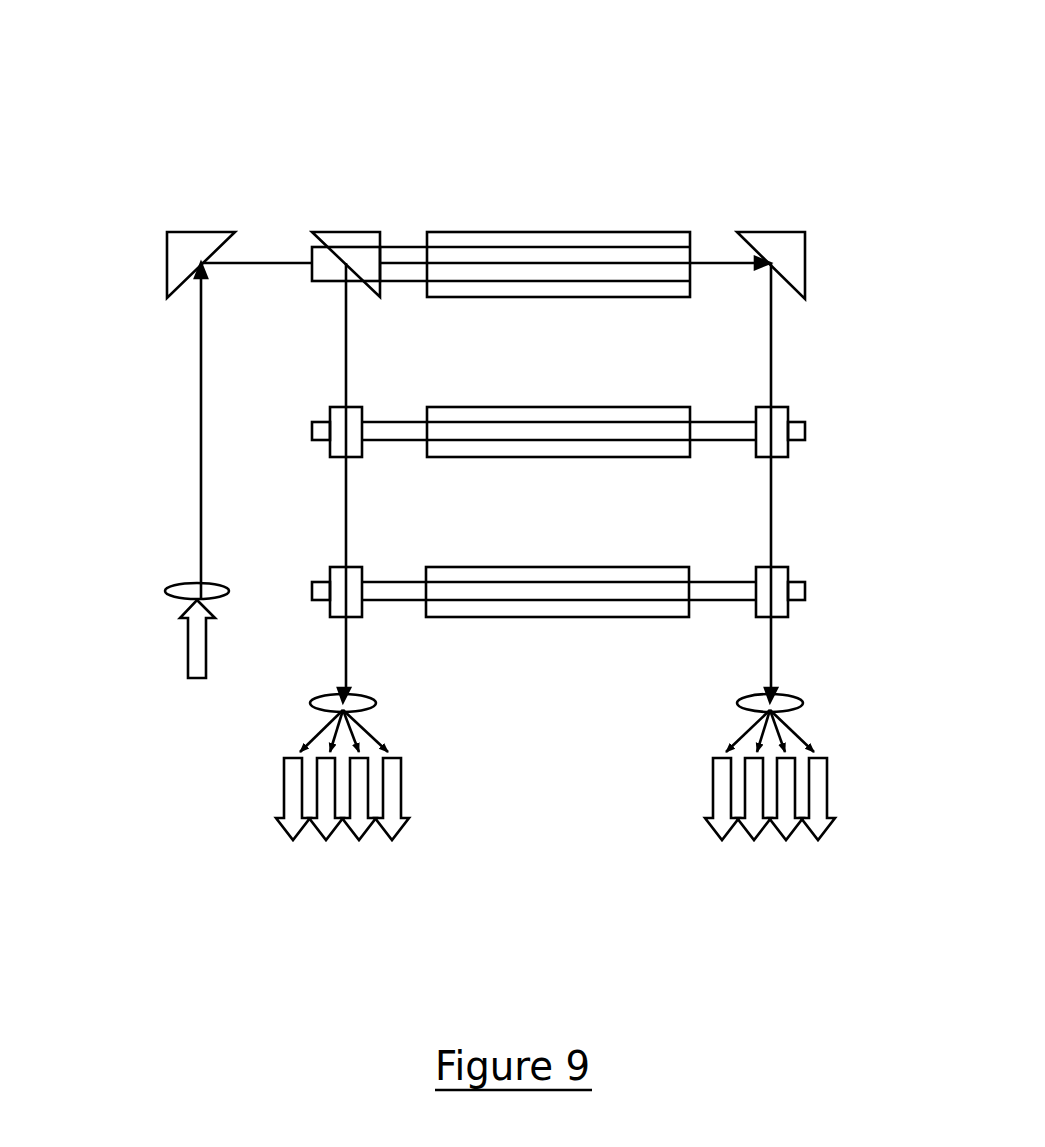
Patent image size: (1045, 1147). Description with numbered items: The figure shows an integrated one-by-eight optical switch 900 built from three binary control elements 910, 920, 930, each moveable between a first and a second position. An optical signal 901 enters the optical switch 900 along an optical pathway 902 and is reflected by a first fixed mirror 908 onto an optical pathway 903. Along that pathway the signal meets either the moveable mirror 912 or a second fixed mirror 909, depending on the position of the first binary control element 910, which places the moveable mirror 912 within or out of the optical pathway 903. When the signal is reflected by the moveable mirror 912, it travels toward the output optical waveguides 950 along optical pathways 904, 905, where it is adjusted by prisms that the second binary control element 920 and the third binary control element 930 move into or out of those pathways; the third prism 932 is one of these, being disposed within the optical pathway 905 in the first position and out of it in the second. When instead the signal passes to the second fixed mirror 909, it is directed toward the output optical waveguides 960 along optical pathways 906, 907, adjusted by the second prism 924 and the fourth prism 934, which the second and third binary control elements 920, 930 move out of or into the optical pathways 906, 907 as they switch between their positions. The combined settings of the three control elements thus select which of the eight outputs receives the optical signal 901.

The 1×8 optical switch 900 is at (142, 80).
The optical signal 901 is at (192, 680).
The optical pathway 902 is at (195, 553).
The optical pathway 903 is at (268, 240).
The optical pathway 904 is at (345, 373).
The optical pathway 905 is at (345, 528).
The optical pathway 906 is at (772, 342).
The optical pathway 907 is at (772, 512).
The first fixed mirror 908 is at (197, 233).
The second fixed mirror 909 is at (778, 240).
The first binary control element 910 is at (536, 238).
The moveable mirror 912 is at (360, 232).
The second binary control element 920 is at (597, 415).
The second prism 924 is at (782, 418).
The third binary control element 930 is at (548, 620).
The third prism 932 is at (336, 570).
The fourth prism 934 is at (783, 580).
The output optical waveguides 950 is at (307, 863).
The output optical waveguides 960 is at (817, 868).